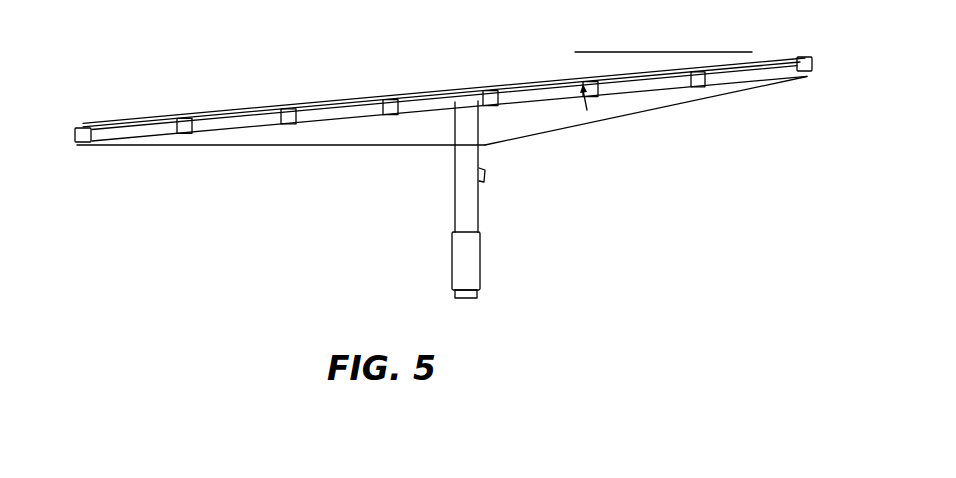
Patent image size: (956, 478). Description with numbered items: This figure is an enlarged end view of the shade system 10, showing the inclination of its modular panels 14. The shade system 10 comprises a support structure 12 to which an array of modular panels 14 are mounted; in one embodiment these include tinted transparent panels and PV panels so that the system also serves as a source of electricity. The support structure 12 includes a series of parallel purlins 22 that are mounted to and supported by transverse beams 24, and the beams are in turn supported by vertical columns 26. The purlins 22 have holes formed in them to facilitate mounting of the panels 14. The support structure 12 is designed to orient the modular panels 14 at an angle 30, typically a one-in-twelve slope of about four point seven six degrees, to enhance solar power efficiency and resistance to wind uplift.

The shade system 10 is at (177, 72).
The support structure 12 is at (555, 188).
The modular panels 14 is at (433, 91).
The purlins 22 is at (187, 130).
The transverse beams 24 is at (312, 136).
The vertical columns 26 is at (465, 207).
The angle 30 is at (588, 52).